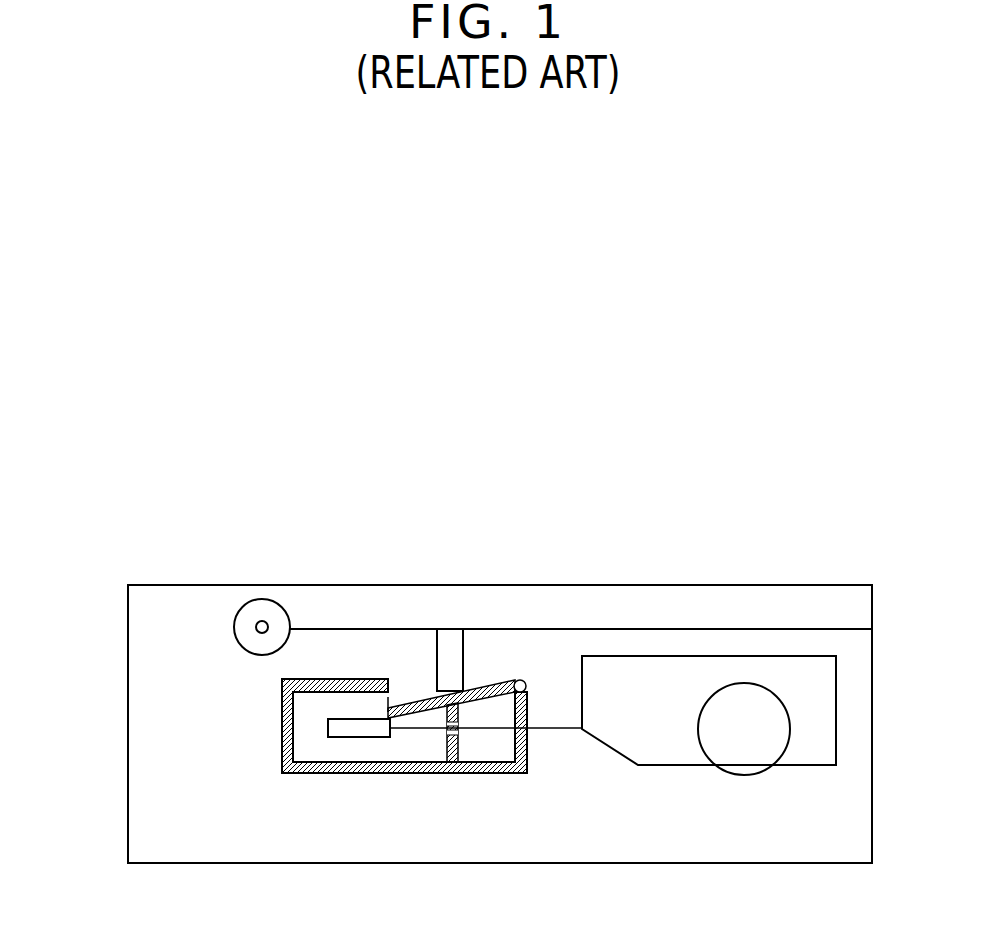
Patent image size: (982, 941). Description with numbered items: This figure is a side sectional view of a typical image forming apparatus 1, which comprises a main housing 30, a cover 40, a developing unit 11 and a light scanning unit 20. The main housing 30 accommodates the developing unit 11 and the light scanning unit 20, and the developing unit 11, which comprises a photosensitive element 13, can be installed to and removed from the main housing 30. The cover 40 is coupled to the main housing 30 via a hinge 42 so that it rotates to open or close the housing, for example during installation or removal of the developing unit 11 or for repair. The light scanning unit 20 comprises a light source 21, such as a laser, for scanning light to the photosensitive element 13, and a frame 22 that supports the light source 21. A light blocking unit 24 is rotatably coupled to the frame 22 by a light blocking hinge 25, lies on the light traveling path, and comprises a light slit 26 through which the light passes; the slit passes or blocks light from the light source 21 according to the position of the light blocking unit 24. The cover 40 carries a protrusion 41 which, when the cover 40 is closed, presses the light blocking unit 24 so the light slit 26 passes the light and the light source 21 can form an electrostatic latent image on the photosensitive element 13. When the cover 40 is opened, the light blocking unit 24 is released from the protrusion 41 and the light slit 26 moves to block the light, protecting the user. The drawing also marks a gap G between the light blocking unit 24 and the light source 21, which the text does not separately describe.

The image forming apparatus 1 is at (104, 489).
The main housing 30 is at (128, 727).
The cover 40 is at (598, 600).
The hinge 42 is at (263, 621).
The protrusion 41 is at (443, 632).
The developing unit 11 is at (798, 667).
The photosensitive element 13 is at (735, 695).
The light scanning unit 20 is at (314, 709).
The frame 22 is at (397, 773).
The light blocking unit 24 is at (478, 690).
The light blocking hinge 25 is at (518, 680).
The light slit 26 is at (458, 735).
The light source 21 is at (349, 737).
The gap G is at (388, 702).